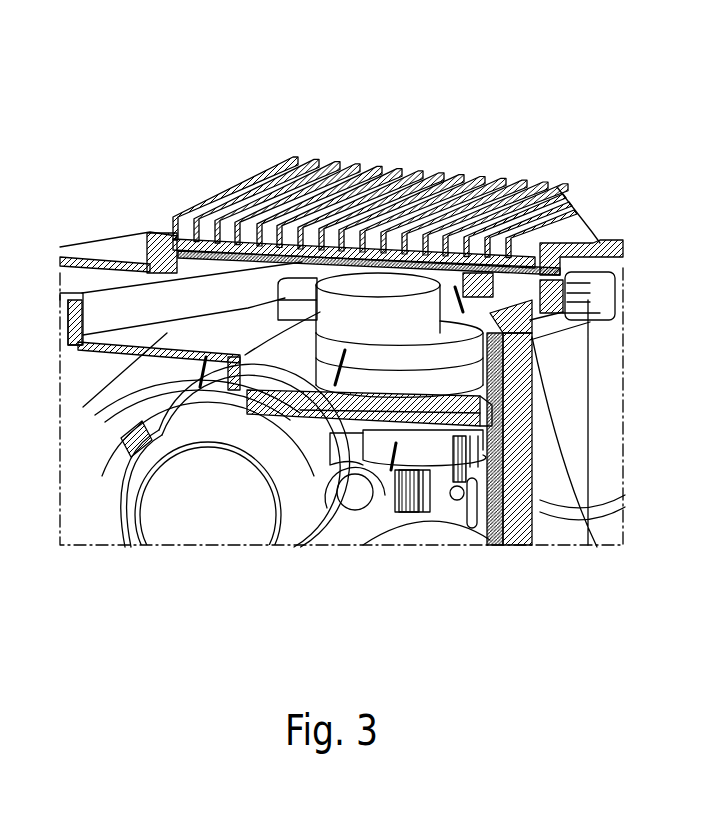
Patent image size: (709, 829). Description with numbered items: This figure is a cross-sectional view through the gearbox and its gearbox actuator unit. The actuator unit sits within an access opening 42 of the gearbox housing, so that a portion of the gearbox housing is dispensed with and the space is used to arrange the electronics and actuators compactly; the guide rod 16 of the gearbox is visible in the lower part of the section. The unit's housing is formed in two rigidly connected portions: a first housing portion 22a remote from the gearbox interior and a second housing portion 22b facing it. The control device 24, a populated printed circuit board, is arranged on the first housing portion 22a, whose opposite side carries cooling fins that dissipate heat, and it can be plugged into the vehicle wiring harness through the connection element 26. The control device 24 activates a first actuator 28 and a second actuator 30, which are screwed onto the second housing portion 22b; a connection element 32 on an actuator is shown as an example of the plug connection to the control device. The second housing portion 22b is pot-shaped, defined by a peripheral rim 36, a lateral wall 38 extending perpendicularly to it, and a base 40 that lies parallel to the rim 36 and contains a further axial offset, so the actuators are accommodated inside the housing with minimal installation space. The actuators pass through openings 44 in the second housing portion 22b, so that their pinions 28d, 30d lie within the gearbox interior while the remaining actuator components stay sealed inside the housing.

The guide rod 16 is at (352, 512).
The first housing portion 22a is at (519, 290).
The second housing portion 22b is at (497, 293).
The control device 24 is at (253, 257).
The connection element 26 is at (593, 273).
The first actuator 28 is at (330, 400).
The pinion 28d is at (425, 487).
The second actuator 30 is at (442, 275).
The pinion 30d is at (478, 490).
The connection element 32 is at (288, 307).
The peripheral rim 36 is at (597, 547).
The lateral wall 38 is at (520, 440).
The base 40 is at (126, 545).
The access opening 42 is at (197, 365).
The openings 44 is at (397, 443).